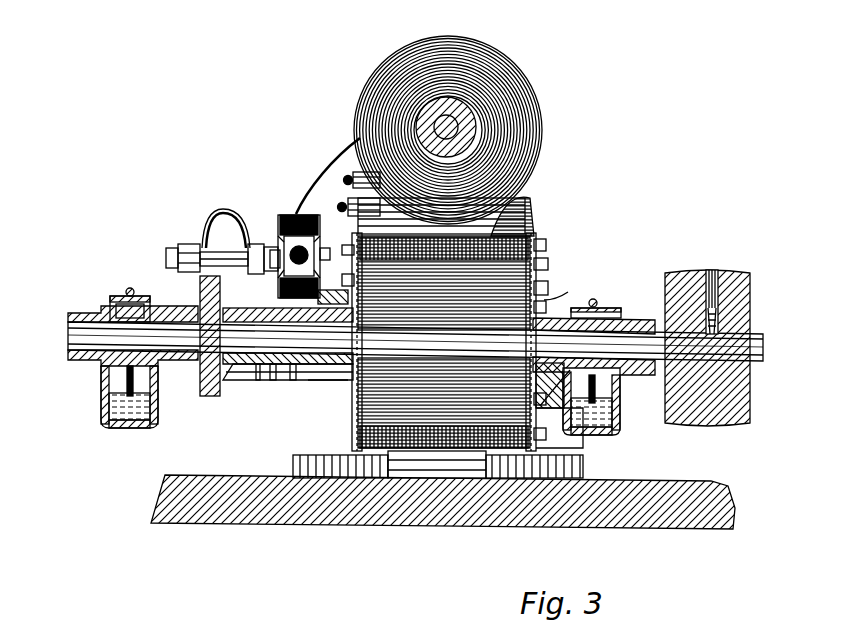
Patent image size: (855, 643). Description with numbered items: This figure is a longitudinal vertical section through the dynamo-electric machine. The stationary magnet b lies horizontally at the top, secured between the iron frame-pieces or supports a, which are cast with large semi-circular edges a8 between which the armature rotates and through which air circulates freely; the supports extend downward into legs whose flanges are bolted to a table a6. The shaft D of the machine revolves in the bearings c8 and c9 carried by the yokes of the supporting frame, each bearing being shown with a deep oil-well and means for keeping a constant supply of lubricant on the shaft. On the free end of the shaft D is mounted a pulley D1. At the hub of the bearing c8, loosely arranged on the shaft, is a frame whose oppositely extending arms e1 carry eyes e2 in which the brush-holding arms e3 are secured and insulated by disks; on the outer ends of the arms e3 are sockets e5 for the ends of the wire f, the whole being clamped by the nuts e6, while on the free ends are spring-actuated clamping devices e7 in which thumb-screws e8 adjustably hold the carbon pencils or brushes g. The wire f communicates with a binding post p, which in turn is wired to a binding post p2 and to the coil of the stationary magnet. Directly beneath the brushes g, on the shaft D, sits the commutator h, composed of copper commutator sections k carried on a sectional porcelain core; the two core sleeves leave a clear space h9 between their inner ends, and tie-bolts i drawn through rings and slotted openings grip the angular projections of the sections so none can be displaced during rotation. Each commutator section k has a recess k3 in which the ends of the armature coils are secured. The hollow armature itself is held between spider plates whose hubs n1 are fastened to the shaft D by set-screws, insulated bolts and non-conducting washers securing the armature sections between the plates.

The frame-piece or support a is at (500, 230).
The table a6 is at (464, 508).
The semi-circular edge a8 is at (497, 212).
The stationary magnet b is at (515, 80).
The bearing c8 is at (170, 262).
The bearing c9 is at (626, 372).
The shaft D is at (60, 327).
The pulley D1 is at (684, 266).
The arm e1 is at (242, 266).
The eye e2 is at (203, 388).
The brush-holding arm e3 is at (262, 264).
The socket e5 is at (180, 238).
The nut e6 is at (169, 250).
The spring-actuated clamping device e7 is at (314, 242).
The thumb-screw e8 is at (266, 232).
The wire f is at (282, 150).
The brush g is at (292, 207).
The commutator h is at (240, 358).
The clear space h9 is at (287, 358).
The tie-bolt i is at (254, 358).
The commutator section k is at (270, 358).
The recess or opening k3 is at (334, 290).
The hub n1 is at (530, 312).
The binding post p is at (346, 168).
The binding post p2 is at (340, 195).